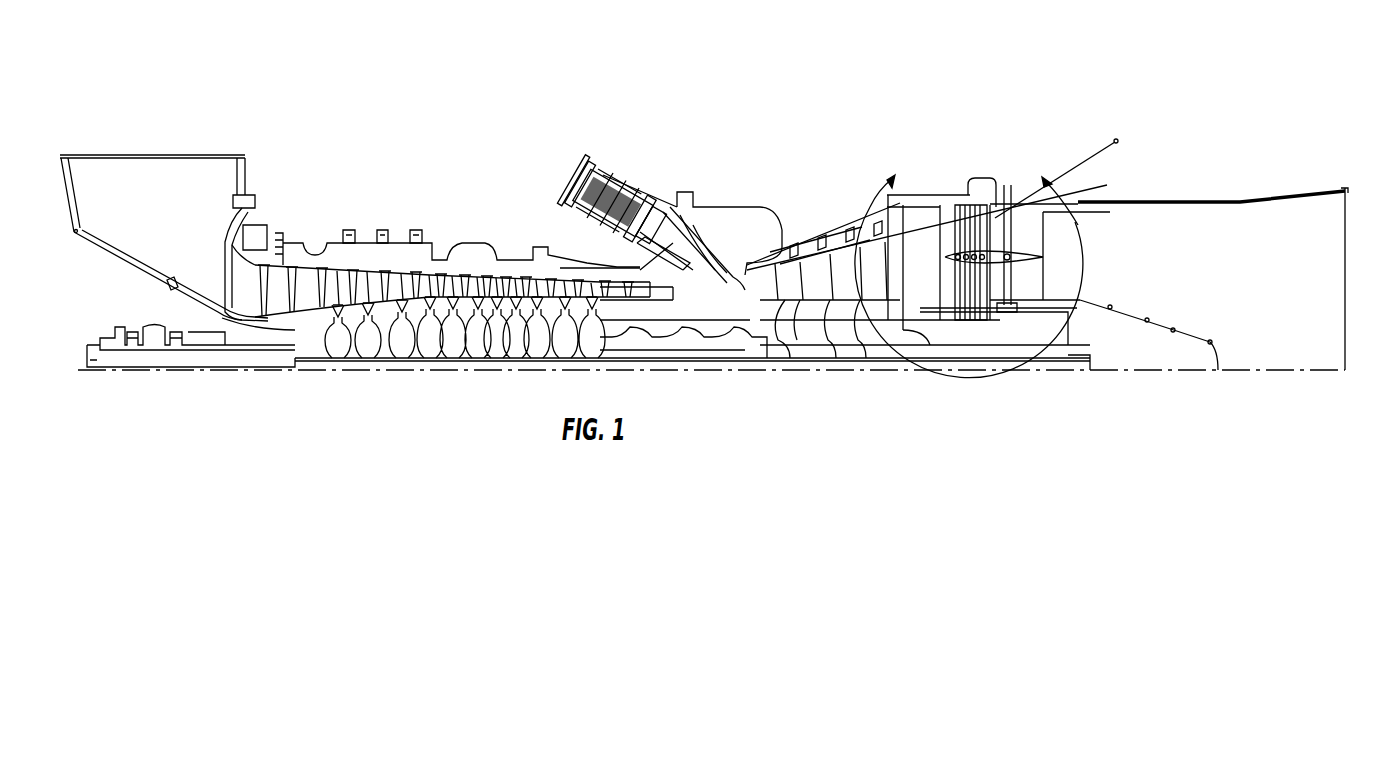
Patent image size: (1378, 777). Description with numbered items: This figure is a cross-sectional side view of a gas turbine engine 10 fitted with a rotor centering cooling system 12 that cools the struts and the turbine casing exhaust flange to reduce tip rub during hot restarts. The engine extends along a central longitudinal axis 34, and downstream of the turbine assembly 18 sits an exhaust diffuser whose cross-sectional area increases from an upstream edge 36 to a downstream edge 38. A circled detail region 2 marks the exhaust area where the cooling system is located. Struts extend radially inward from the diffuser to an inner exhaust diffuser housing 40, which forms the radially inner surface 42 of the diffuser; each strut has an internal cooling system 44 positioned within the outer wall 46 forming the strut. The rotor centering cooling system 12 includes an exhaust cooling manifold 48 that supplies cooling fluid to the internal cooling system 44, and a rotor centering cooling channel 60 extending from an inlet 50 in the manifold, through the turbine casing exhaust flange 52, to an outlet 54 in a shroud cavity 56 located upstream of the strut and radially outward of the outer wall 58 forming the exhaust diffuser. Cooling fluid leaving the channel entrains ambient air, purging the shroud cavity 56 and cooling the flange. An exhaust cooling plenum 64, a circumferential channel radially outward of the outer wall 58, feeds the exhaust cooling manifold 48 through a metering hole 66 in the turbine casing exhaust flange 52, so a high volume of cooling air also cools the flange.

The gas turbine engine 10 is at (575, 222).
The rotor centering cooling system 12 is at (954, 215).
The turbine assembly 18 is at (821, 242).
The section line of FIG. 2 is at (969, 267).
The central longitudinal axis 34 is at (845, 372).
The upstream edge 36 is at (912, 220).
The downstream edge 38 is at (1343, 192).
The inner exhaust diffuser housing 40 is at (1050, 298).
The radially inner surface 42 is at (1027, 295).
The internal cooling system 44 is at (940, 220).
The outer wall 46 is at (990, 240).
The exhaust cooling manifold 48 is at (953, 197).
The inlet 50 is at (965, 182).
The turbine casing exhaust flange 52 is at (940, 207).
The outlet 54 is at (955, 252).
The shroud cavity 56 is at (923, 232).
The outer wall 58 is at (1013, 207).
The rotor centering cooling channel 60 is at (1000, 200).
The exhaust cooling plenum 64 is at (897, 207).
The metering hole 66 is at (935, 215).